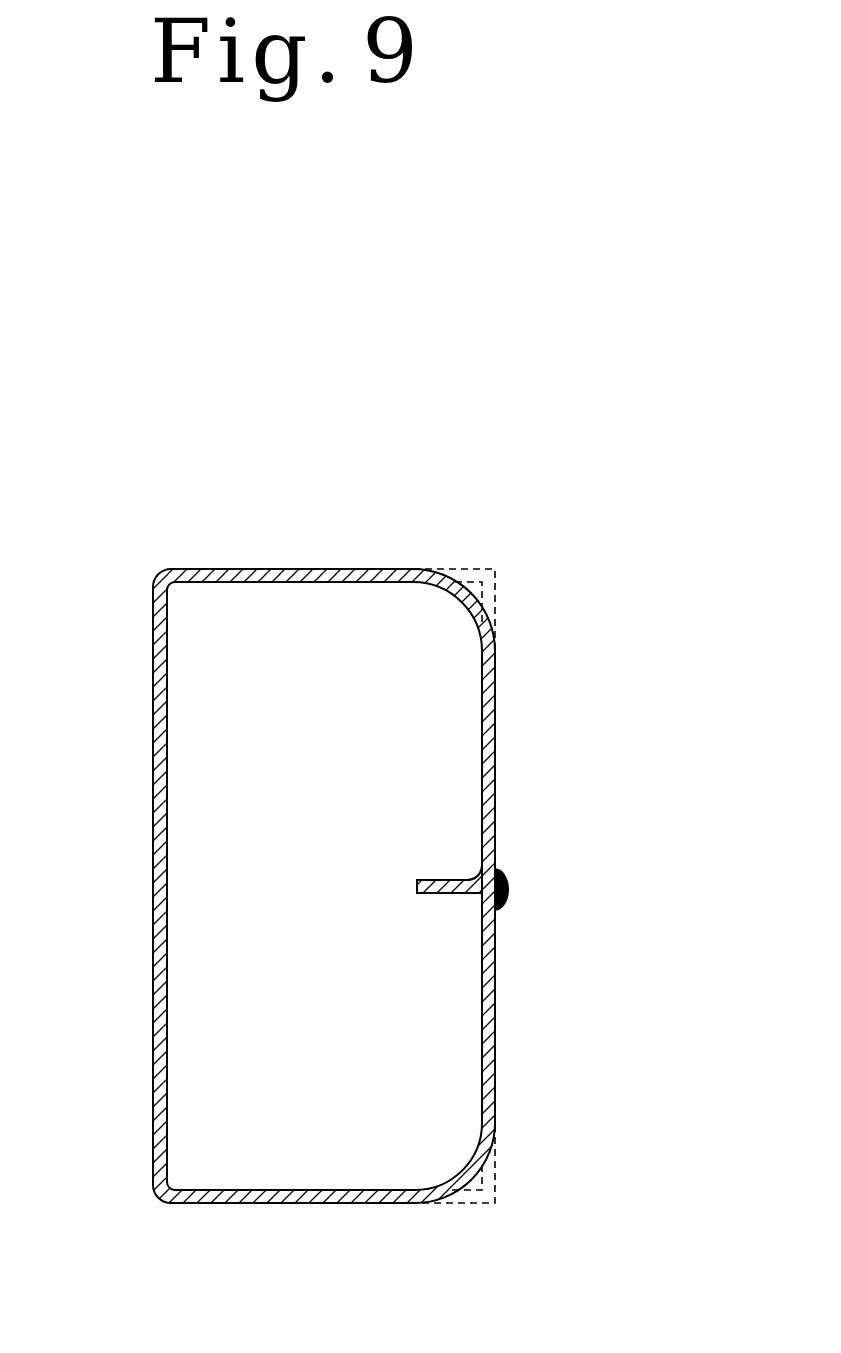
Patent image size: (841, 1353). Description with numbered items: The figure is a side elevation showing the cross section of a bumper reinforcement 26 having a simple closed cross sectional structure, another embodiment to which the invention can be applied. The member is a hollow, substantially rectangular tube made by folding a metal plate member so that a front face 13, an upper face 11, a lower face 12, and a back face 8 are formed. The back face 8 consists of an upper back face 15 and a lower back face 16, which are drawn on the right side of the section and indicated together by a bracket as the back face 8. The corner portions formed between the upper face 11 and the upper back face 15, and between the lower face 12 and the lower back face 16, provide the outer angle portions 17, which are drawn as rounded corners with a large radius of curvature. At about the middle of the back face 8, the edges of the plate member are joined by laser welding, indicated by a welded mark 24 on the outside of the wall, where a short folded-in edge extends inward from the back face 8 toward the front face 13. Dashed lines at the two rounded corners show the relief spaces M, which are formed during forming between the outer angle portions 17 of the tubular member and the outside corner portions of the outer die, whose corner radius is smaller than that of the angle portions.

The back face 8 is at (617, 887).
The upper face 11 is at (283, 568).
The lower face 12 is at (312, 1203).
The front face 13 is at (152, 915).
The upper back face 15 is at (495, 693).
The lower back face 16 is at (582, 1006).
The outer angle portions 17 is at (477, 572).
The welded mark 24 is at (508, 890).
The bumper reinforcement 26 is at (145, 627).
The relief spaces M is at (473, 595).